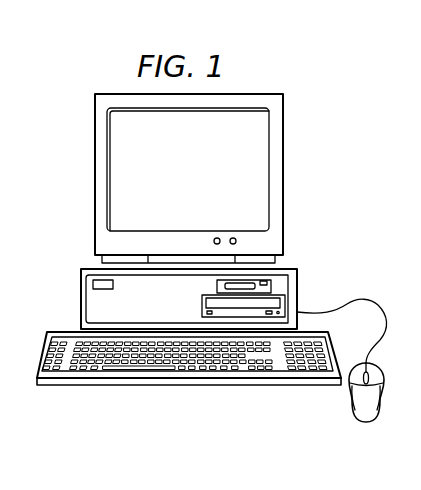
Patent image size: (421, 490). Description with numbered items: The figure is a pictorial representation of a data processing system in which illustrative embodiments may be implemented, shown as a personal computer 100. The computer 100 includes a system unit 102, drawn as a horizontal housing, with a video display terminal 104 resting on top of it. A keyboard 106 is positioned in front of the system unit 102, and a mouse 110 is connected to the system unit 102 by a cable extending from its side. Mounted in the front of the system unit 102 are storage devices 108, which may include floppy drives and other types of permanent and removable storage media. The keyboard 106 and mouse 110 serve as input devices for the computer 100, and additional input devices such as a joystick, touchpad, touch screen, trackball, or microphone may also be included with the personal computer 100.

The computer 100 is at (90, 46).
The system unit 102 is at (81, 299).
The video display terminal 104 is at (283, 176).
The keyboard 106 is at (123, 385).
The storage devices 108 is at (271, 285).
The mouse 110 is at (366, 422).